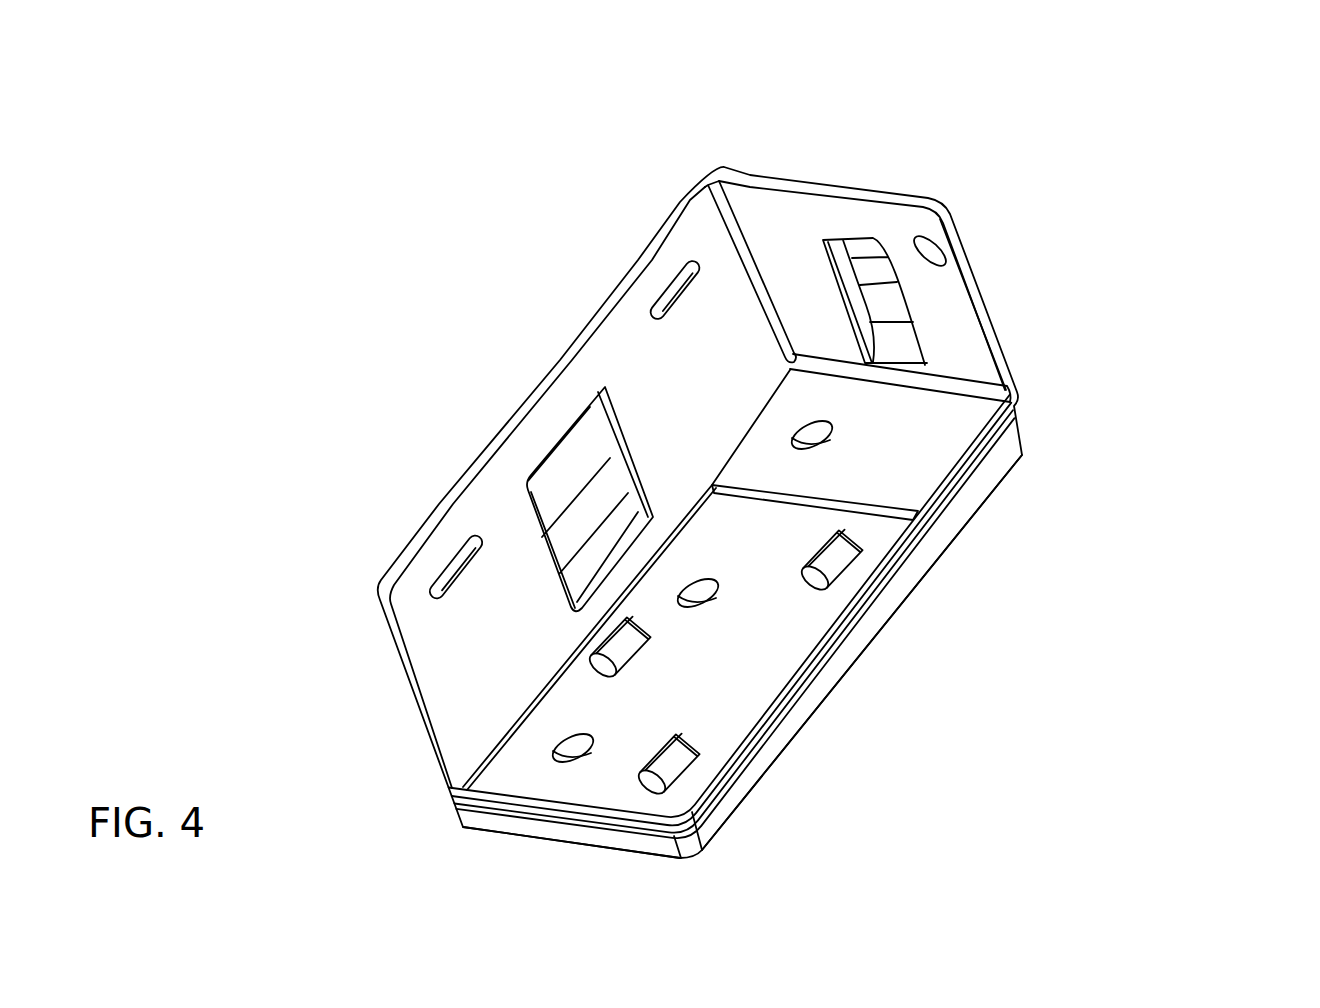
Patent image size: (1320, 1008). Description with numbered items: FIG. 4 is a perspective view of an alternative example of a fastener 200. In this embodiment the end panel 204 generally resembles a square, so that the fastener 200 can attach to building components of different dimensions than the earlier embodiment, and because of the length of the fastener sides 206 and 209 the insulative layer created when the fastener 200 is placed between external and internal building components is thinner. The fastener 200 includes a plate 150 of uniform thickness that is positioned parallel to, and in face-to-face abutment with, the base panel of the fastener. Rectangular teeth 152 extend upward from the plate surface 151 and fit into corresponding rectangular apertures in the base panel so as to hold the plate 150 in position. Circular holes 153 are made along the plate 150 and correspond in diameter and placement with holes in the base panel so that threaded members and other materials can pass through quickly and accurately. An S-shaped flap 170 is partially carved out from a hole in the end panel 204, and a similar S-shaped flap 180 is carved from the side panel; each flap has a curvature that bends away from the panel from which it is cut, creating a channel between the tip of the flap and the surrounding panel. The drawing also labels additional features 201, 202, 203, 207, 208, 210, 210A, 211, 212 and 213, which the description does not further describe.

The fastener 200 is at (1000, 194).
The side wall 210 is at (536, 380).
The inner surface of side wall 208 is at (640, 358).
The fastener side 209 is at (763, 270).
The end panel 204 is at (950, 323).
The fastener side 206 is at (997, 348).
The S-shaped flap 170 is at (892, 309).
The shelf 207 is at (907, 463).
The shelf hole 213 is at (815, 432).
The side wall lower portion with slots 210A is at (582, 630).
The S-shaped flap 180 is at (590, 515).
The plate 150 is at (880, 603).
The base side edge 202 is at (770, 710).
The base plate 201 is at (757, 660).
The circular holes 153 is at (580, 755).
The plate surface 151 is at (860, 620).
The peg 212 is at (550, 747).
The rectangular teeth 152 is at (683, 773).
The base bottom edge 211 is at (723, 792).
The base front edge 203 is at (463, 826).